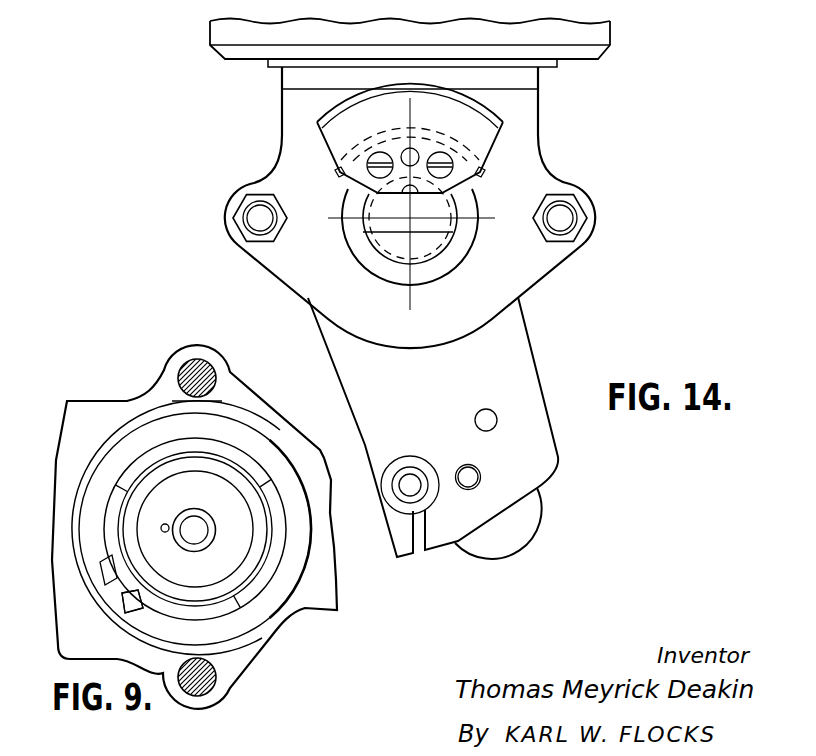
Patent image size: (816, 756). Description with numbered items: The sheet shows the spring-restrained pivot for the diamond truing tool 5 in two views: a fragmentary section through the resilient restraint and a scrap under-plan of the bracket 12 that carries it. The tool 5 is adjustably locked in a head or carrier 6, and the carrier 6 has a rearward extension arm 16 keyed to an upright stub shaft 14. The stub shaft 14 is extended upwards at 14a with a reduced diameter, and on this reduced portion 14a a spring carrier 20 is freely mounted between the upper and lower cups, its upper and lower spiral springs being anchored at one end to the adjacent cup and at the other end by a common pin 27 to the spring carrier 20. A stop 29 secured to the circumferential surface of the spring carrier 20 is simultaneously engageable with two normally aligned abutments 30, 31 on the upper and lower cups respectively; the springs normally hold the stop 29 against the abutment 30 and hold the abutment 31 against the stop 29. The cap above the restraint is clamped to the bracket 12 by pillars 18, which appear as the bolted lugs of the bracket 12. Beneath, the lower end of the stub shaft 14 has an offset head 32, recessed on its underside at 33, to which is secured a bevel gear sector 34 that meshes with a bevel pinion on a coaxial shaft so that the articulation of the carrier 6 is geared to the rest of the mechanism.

In FIG. 14, the diamond truing tool 5 is at (408, 483).
In FIG. 14, the head or carrier 6 is at (546, 443).
In FIG. 9, the bracket 12 is at (80, 417).
In FIG. 14, the stub shaft 14 is at (440, 232).
In FIG. 9, the reduced-diameter extension of stub shaft 14a is at (200, 534).
In FIG. 9, the rearward extension arm 16 is at (340, 562).
In FIG. 14, the pillars 18 is at (257, 220).
In FIG. 9, the pillars 18 is at (187, 373).
In FIG. 9, the spring carrier 20 is at (128, 520).
In FIG. 9, the common pin 27 is at (164, 522).
In FIG. 9, the stop 29 is at (117, 590).
In FIG. 9, the abutment 30 is at (152, 600).
In FIG. 9, the abutment 31 is at (132, 601).
In FIG. 14, the offset head 32 is at (363, 197).
In FIG. 14, the recess 33 is at (404, 195).
In FIG. 14, the bevel gear sector 34 is at (338, 170).